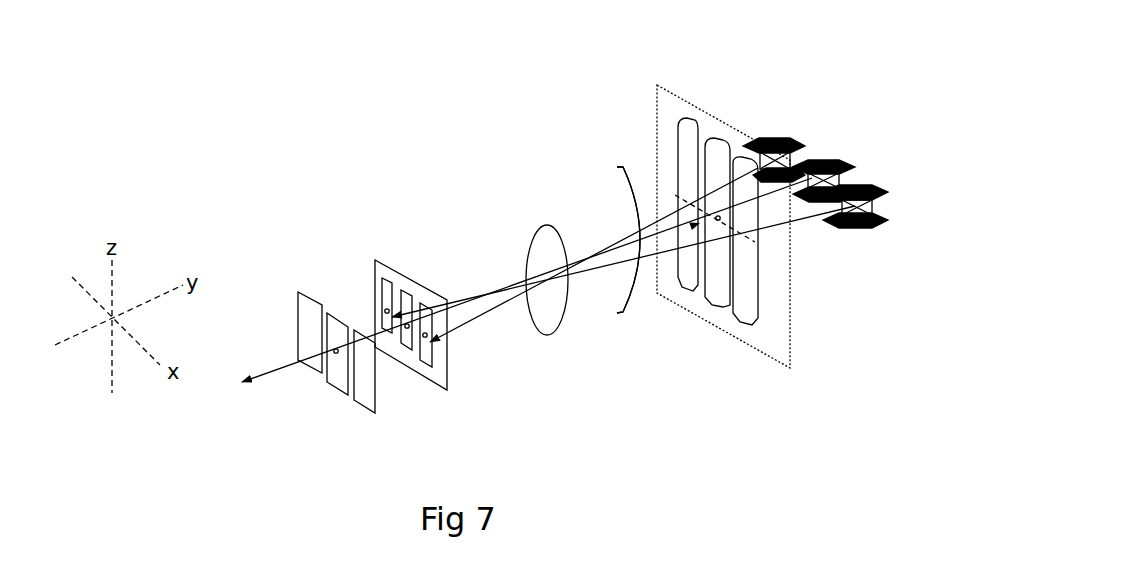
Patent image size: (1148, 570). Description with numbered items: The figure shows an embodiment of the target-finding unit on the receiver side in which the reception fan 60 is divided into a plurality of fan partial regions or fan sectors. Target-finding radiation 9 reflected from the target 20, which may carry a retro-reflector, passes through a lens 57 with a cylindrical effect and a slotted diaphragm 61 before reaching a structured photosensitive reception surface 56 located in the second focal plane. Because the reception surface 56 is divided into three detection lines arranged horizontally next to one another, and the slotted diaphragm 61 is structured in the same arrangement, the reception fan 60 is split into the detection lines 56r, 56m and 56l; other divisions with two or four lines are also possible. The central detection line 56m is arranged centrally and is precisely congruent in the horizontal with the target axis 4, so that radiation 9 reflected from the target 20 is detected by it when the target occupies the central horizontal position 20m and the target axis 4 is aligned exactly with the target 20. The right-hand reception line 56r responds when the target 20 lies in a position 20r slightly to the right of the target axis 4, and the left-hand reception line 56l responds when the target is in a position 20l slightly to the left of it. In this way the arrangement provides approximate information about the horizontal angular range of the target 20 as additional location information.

The target 20 is at (853, 145).
The left target position 20l is at (787, 138).
The central horizontal target position 20m is at (840, 160).
The right target position 20r is at (874, 197).
The reception fan 60 is at (669, 111).
The target-finding radiation 9 is at (613, 235).
The target axis 4 is at (613, 246).
The lens 57 is at (553, 320).
The slotted diaphragm 61 is at (392, 278).
The photosensitive reception surface 56 is at (348, 320).
The right-hand reception line 56r is at (317, 312).
The central detection line 56m is at (333, 380).
The left-hand reception line 56l is at (363, 362).